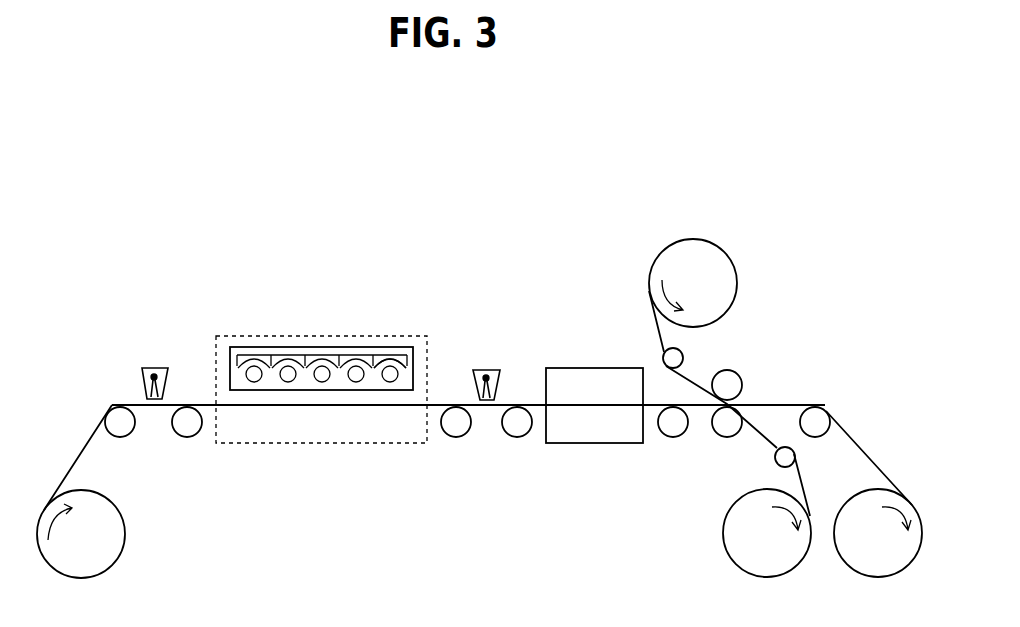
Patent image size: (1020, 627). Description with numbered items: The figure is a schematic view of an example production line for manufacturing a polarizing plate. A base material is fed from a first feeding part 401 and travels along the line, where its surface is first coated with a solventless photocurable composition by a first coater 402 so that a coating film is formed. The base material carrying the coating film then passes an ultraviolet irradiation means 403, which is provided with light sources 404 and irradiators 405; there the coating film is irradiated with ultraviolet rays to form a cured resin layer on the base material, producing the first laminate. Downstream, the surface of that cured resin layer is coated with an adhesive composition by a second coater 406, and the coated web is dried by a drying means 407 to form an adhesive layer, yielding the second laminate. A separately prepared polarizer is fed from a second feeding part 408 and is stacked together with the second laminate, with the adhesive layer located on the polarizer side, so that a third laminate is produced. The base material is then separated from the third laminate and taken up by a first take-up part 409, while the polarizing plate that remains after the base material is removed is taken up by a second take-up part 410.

The first feeding part 401 is at (108, 541).
The first coater 402 is at (143, 372).
The ultraviolet irradiation means 403 is at (322, 371).
The light source 404 is at (390, 380).
The irradiator 405 is at (385, 364).
The second coater 406 is at (484, 370).
The drying means 407 is at (590, 378).
The second feeding part 408 is at (727, 283).
The first take-up part 409 is at (737, 537).
The second take-up part 410 is at (870, 552).